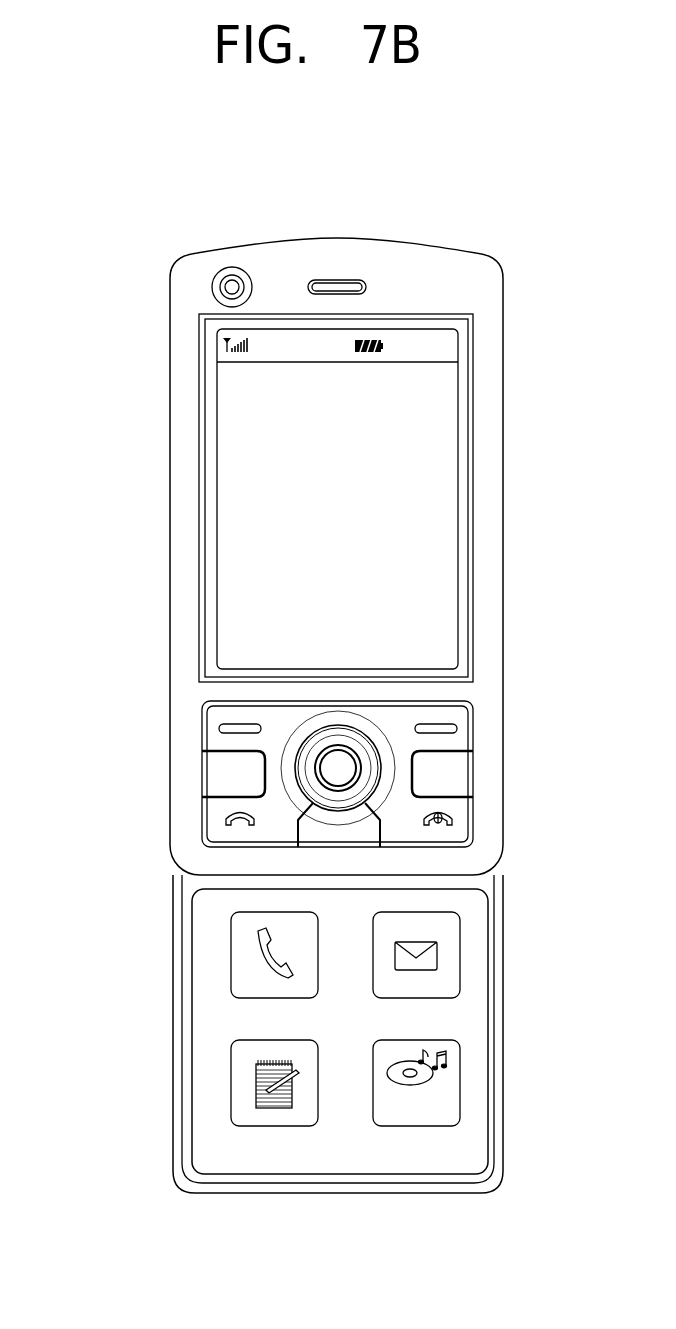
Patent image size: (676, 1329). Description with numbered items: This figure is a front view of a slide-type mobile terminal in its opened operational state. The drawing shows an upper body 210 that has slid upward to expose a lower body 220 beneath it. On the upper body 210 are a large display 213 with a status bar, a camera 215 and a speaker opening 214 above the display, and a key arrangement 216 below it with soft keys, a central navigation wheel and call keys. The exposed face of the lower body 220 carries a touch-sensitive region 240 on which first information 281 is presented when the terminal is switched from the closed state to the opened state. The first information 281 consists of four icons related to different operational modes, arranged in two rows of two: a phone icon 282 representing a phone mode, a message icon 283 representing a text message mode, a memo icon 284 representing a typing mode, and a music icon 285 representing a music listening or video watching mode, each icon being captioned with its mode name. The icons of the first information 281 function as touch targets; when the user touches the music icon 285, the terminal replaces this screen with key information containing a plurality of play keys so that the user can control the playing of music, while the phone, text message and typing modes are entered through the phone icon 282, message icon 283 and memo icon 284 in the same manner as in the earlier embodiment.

The upper body (slider) of mobile terminal 210 is at (157, 349).
The display unit 213 is at (248, 470).
The audio output unit (speaker) 214 is at (337, 283).
The camera 215 is at (233, 283).
The user input unit (keypad) 216 is at (215, 730).
The lower body of mobile terminal 220 is at (158, 903).
The touch pad / touch screen 240 is at (492, 1040).
The first information 281 is at (252, 1034).
The phone icon 282 is at (242, 945).
The message icon 283 is at (387, 980).
The memo icon 284 is at (242, 1113).
The music icon 285 is at (387, 1049).